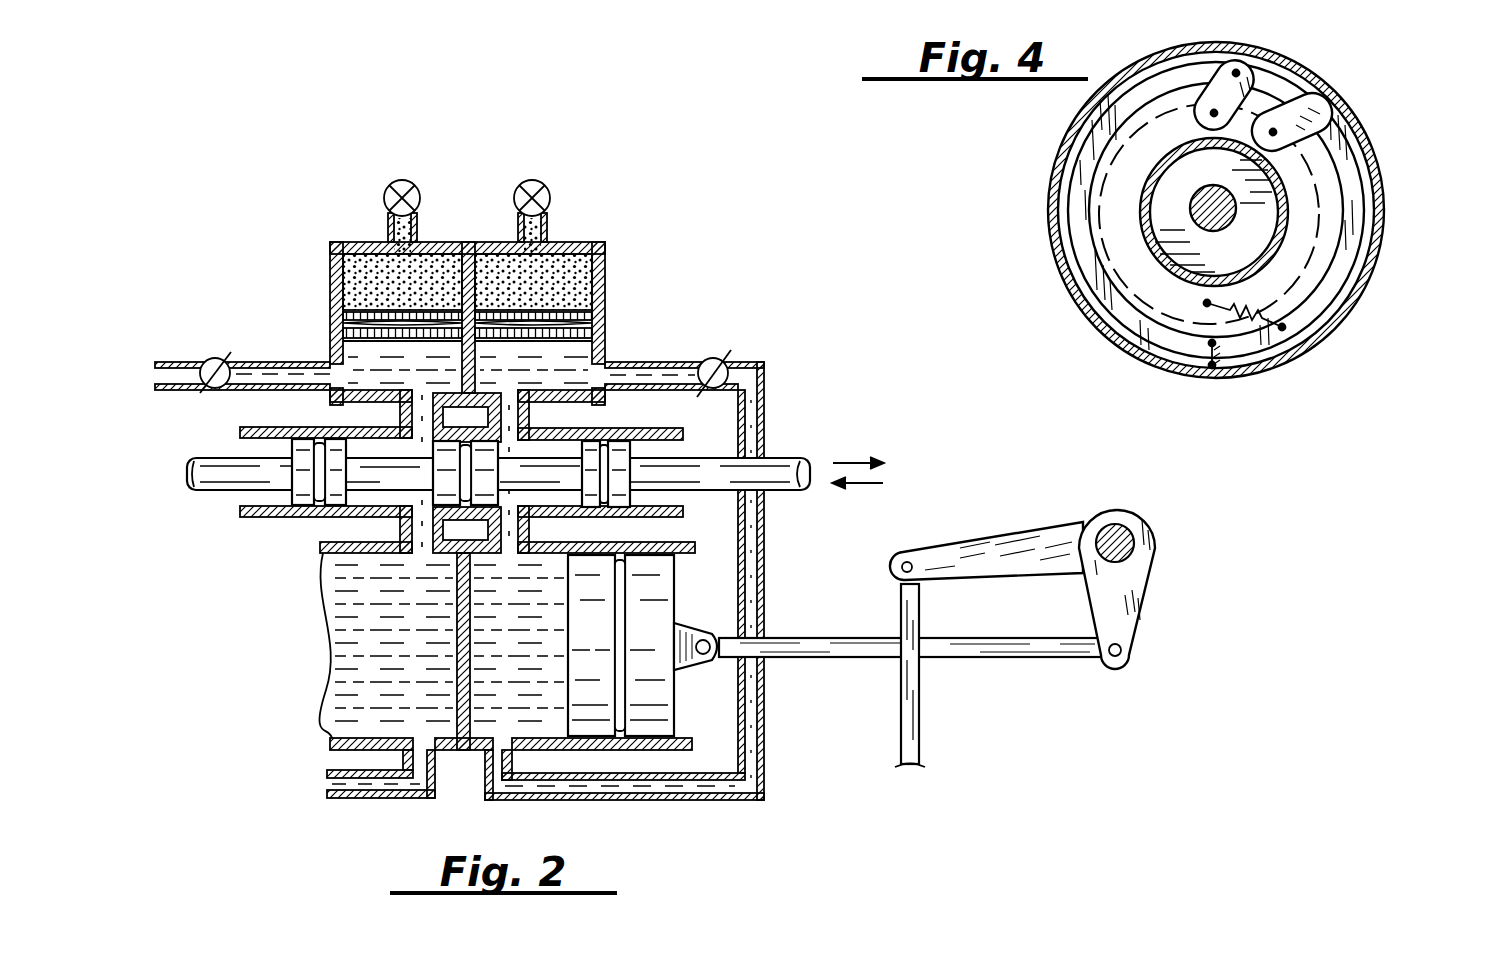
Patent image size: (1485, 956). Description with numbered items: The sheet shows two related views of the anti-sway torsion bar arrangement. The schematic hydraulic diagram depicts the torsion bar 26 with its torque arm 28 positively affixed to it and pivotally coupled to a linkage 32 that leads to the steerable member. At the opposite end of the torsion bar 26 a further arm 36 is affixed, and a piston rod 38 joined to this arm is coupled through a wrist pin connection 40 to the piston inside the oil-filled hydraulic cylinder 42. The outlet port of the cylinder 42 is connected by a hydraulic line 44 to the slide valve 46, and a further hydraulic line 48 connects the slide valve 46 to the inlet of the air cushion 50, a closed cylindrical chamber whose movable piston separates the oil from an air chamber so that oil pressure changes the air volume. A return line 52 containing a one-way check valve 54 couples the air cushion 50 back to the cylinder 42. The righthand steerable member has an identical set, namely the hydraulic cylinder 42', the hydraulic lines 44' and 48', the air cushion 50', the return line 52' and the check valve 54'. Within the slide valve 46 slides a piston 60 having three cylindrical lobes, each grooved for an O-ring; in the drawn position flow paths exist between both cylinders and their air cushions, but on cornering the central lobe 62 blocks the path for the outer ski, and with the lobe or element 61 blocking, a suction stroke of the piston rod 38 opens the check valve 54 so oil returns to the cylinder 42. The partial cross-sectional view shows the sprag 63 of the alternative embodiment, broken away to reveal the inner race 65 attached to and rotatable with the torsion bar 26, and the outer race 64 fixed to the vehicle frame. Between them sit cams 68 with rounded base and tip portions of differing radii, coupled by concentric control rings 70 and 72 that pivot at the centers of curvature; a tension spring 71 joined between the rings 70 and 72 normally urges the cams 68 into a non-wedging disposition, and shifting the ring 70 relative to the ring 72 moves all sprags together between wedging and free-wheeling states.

In FIG. 2, the torsion bar 26 is at (1112, 526).
In FIG. 4, the torsion bar 26 is at (1200, 187).
In FIG. 2, the torque arm 28 is at (1010, 530).
In FIG. 2, the linkage 32 is at (920, 715).
In FIG. 2, the further arm 36 is at (1155, 588).
In FIG. 2, the piston rod 38 is at (1015, 660).
In FIG. 2, the wrist pin connection 40 is at (710, 655).
In FIG. 2, the hydraulic cylinder 42 is at (583, 702).
In FIG. 2, the hydraulic cylinder 42' is at (360, 661).
In FIG. 2, the hydraulic line 44 is at (623, 529).
In FIG. 2, the hydraulic line 44' is at (326, 533).
In FIG. 2, the slide valve 46 is at (236, 410).
In FIG. 2, the hydraulic line 48 is at (600, 415).
In FIG. 2, the hydraulic line 48' is at (326, 414).
In FIG. 2, the air cushion 50 is at (569, 286).
In FIG. 2, the air cushion 50' is at (424, 286).
In FIG. 2, the return line 52 is at (624, 607).
In FIG. 2, the return line 52' is at (295, 560).
In FIG. 2, the one-way check valve 54 is at (701, 349).
In FIG. 2, the one-way check valve 54' is at (185, 346).
In FIG. 2, the slidable piston 60 is at (783, 458).
In FIG. 2, the piston element 61 is at (623, 463).
In FIG. 2, the central lobe 62 is at (485, 462).
In FIG. 4, the sprag 63 is at (1353, 323).
In FIG. 4, the outer race 64 is at (1357, 117).
In FIG. 4, the inner race 65 is at (1145, 245).
In FIG. 4, the cams 68 is at (1208, 96).
In FIG. 4, the control ring 70 is at (1302, 248).
In FIG. 4, the tension spring 71 is at (1240, 320).
In FIG. 4, the control ring 72 is at (1355, 195).